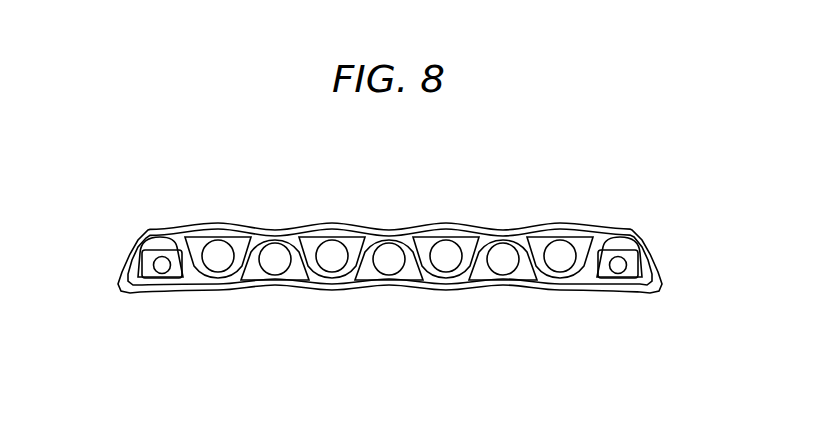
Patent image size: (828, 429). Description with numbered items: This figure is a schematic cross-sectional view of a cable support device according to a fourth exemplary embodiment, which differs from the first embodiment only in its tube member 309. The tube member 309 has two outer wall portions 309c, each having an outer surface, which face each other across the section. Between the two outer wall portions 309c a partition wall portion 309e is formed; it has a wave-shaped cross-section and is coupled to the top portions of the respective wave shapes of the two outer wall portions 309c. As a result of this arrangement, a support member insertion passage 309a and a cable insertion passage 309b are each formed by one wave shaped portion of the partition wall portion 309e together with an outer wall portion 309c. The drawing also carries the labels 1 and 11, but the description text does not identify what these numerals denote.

The tube member 309 is at (249, 311).
The support member insertion passage 309a is at (140, 280).
The cable insertion passage 309b is at (203, 237).
The outer wall portion 309c is at (462, 226).
The partition wall portion 309e is at (413, 262).
The fixing member 1 is at (142, 273).
The hole 11 is at (563, 247).